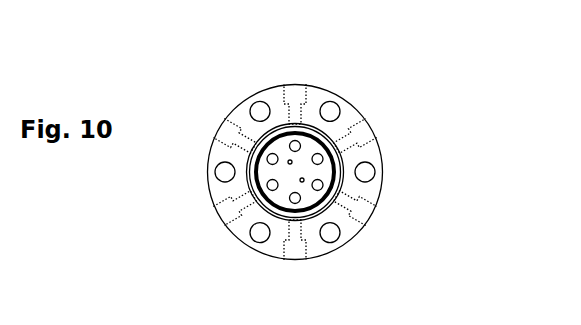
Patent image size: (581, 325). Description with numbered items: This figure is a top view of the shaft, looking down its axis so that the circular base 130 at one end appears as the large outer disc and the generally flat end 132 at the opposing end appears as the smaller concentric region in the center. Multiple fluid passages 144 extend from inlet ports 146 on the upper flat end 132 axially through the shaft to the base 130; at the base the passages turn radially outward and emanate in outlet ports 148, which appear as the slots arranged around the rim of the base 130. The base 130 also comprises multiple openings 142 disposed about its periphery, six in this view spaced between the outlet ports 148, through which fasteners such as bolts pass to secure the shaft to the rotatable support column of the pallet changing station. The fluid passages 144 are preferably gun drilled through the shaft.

The circular base 130 is at (208, 167).
The flat end 132 is at (372, 179).
The openings 142 is at (253, 102).
The fluid passages 144 is at (242, 135).
The inlet ports 146 is at (274, 135).
The outlet ports 148 is at (295, 86).